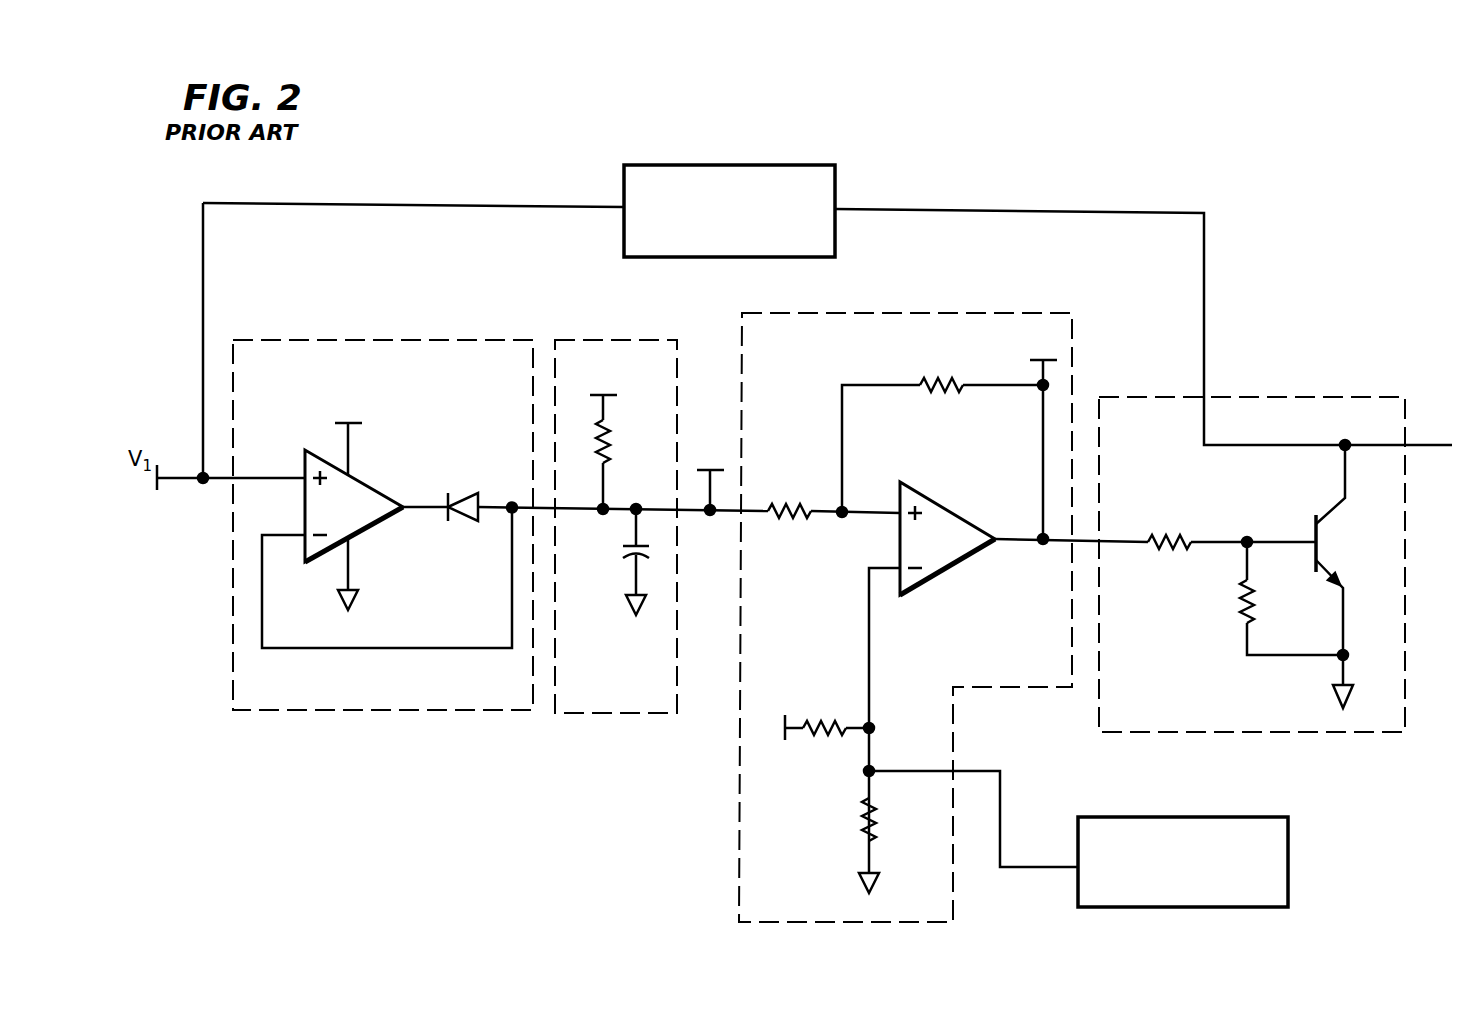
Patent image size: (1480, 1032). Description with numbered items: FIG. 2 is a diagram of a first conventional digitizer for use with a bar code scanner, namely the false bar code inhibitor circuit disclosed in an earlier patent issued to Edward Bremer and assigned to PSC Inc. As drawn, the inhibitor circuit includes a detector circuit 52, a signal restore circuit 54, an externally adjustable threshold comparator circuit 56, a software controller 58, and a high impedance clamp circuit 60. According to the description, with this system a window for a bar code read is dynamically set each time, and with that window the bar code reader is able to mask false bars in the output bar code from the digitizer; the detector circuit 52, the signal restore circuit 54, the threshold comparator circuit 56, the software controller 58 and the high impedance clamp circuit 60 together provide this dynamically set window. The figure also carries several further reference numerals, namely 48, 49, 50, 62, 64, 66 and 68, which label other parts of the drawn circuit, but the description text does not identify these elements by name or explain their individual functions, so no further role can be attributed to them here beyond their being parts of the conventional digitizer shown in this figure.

The bar code reader circuit 48 is at (1252, 295).
The bar code digitizer 49 is at (752, 164).
The clamp control signal path 50 is at (1340, 846).
The detector circuit 52 is at (352, 338).
The signal restore circuit 54 is at (622, 340).
The externally adjustable threshold comparator circuit 56 is at (935, 316).
The software controller 58 is at (1205, 816).
The high impedance clamp circuit 60 is at (1268, 398).
The operational amplifier U1 62 is at (322, 563).
The diode output node 64 is at (480, 496).
The comparator operational amplifier 66 is at (933, 576).
The transistor Q 68 is at (1313, 528).